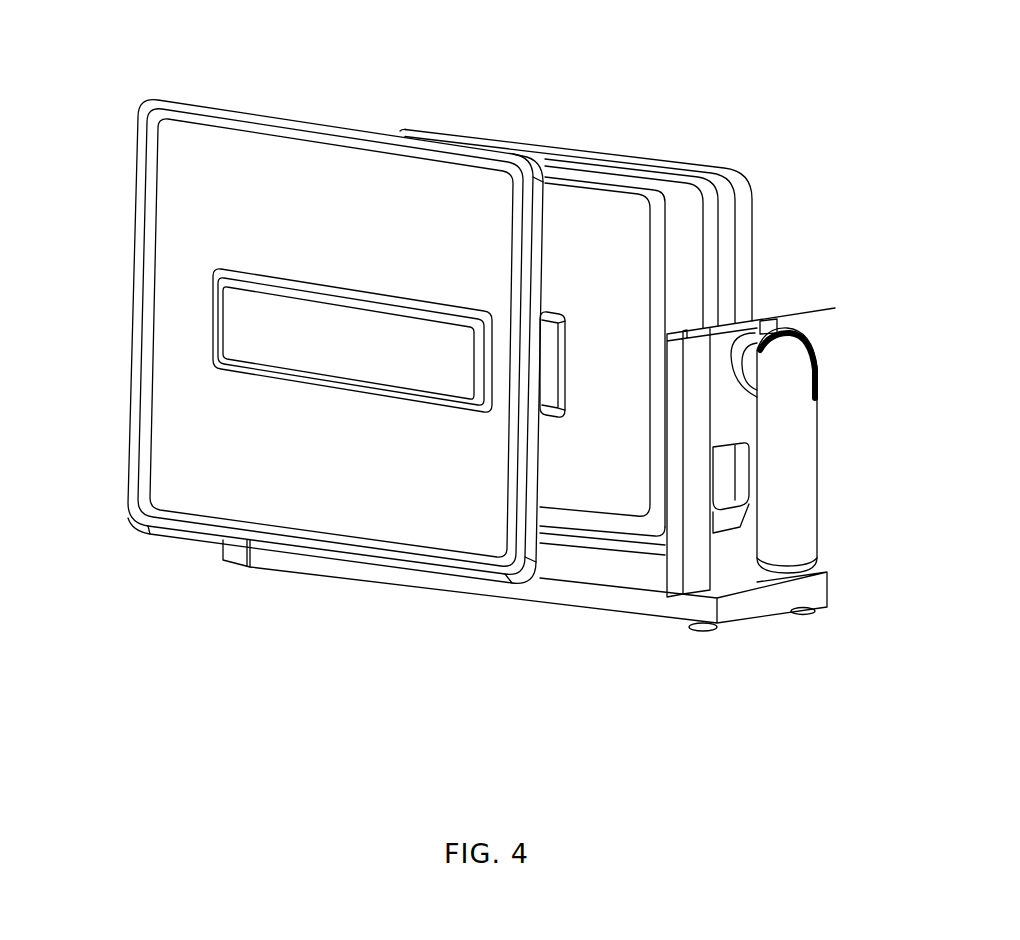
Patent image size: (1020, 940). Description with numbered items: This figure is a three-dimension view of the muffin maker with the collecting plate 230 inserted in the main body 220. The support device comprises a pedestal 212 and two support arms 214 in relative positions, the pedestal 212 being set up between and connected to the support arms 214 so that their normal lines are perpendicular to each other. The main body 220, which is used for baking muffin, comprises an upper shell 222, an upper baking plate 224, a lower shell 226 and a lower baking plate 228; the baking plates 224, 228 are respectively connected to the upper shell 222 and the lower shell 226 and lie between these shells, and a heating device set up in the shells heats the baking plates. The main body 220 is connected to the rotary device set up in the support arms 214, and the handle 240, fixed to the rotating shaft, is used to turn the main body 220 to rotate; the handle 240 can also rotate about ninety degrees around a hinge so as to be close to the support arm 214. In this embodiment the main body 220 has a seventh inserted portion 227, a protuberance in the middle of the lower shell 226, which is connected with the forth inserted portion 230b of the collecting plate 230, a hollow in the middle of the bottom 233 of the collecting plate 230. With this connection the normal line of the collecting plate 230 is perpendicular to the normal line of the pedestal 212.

The pedestal 212 is at (555, 600).
The support arms 214 is at (805, 318).
The main body 220 is at (643, 342).
The upper shell 222 is at (757, 288).
The upper baking plate 224 is at (735, 255).
The lower shell 226 is at (683, 207).
The seventh inserted portion 227 is at (550, 338).
The lower baking plate 228 is at (718, 223).
The collecting plate 230 is at (298, 295).
The forth inserted portion 230b is at (228, 345).
The bottom 233 is at (449, 222).
The handle 240 is at (788, 433).